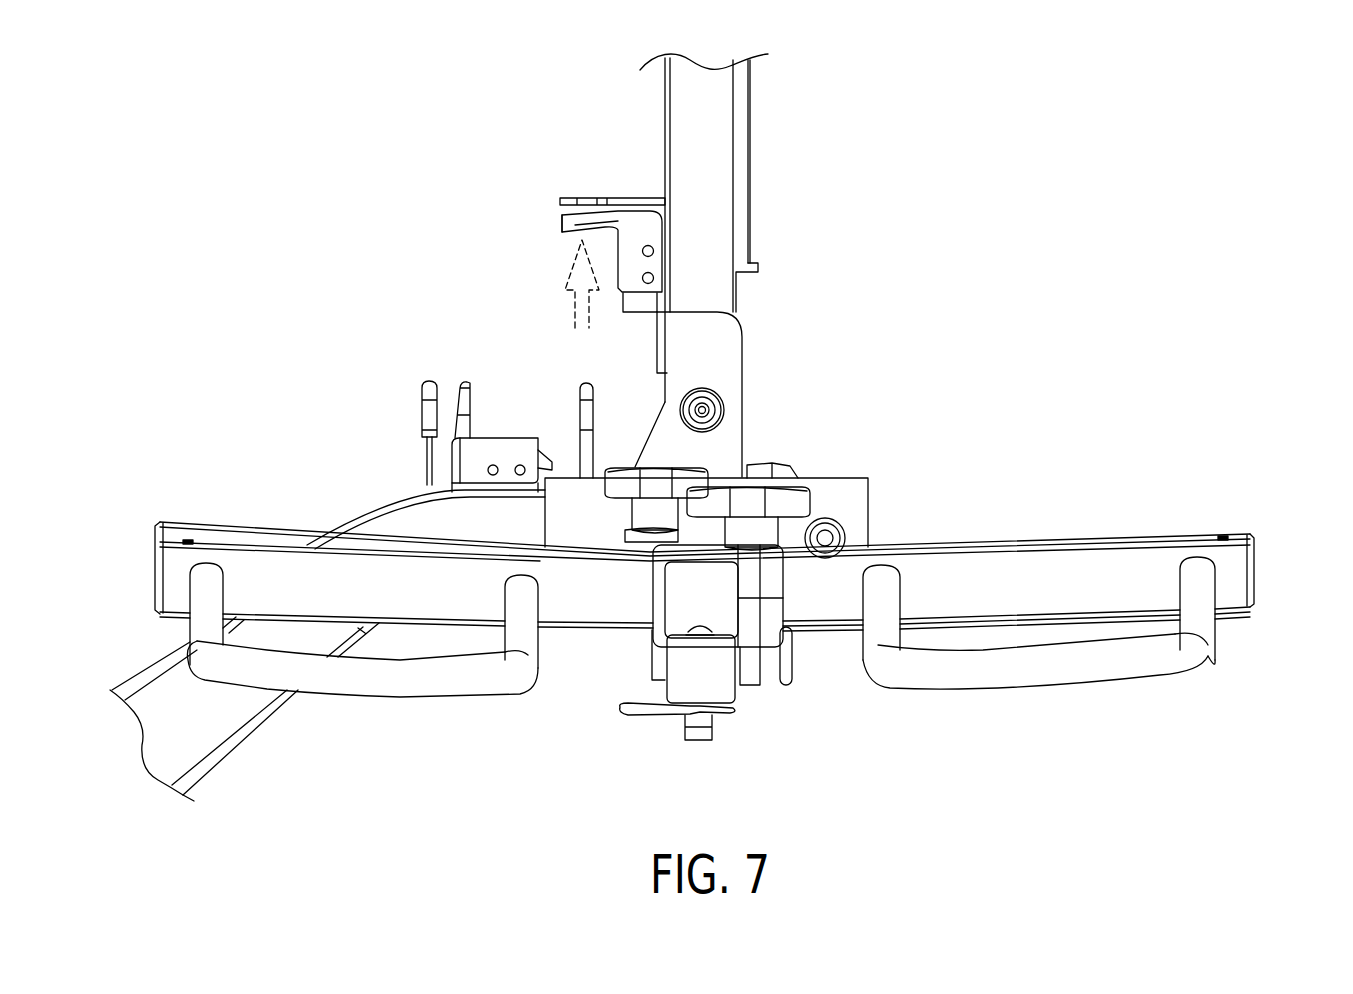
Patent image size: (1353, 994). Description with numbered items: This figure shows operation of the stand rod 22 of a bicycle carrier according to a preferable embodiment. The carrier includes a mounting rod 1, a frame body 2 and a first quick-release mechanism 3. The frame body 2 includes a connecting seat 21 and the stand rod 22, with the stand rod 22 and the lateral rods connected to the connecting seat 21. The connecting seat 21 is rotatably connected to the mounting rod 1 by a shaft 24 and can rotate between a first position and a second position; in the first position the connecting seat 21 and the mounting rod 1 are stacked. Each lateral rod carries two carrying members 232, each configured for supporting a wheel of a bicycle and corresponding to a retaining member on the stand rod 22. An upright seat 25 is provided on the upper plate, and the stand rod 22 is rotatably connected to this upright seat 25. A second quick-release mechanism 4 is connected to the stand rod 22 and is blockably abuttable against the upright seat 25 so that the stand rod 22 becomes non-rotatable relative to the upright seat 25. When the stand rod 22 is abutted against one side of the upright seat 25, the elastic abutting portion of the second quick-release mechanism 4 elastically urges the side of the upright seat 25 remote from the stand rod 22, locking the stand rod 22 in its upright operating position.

The mounting rod 1 is at (260, 717).
The frame body 2 is at (992, 262).
The first quick-release mechanism 3 is at (499, 417).
The second quick-release mechanism 4 is at (667, 241).
The connecting seat 21 is at (845, 472).
The stand rod 22 is at (713, 137).
The shaft 24 is at (840, 532).
The upright seat 25 is at (722, 360).
The carrying member 232 is at (398, 678).